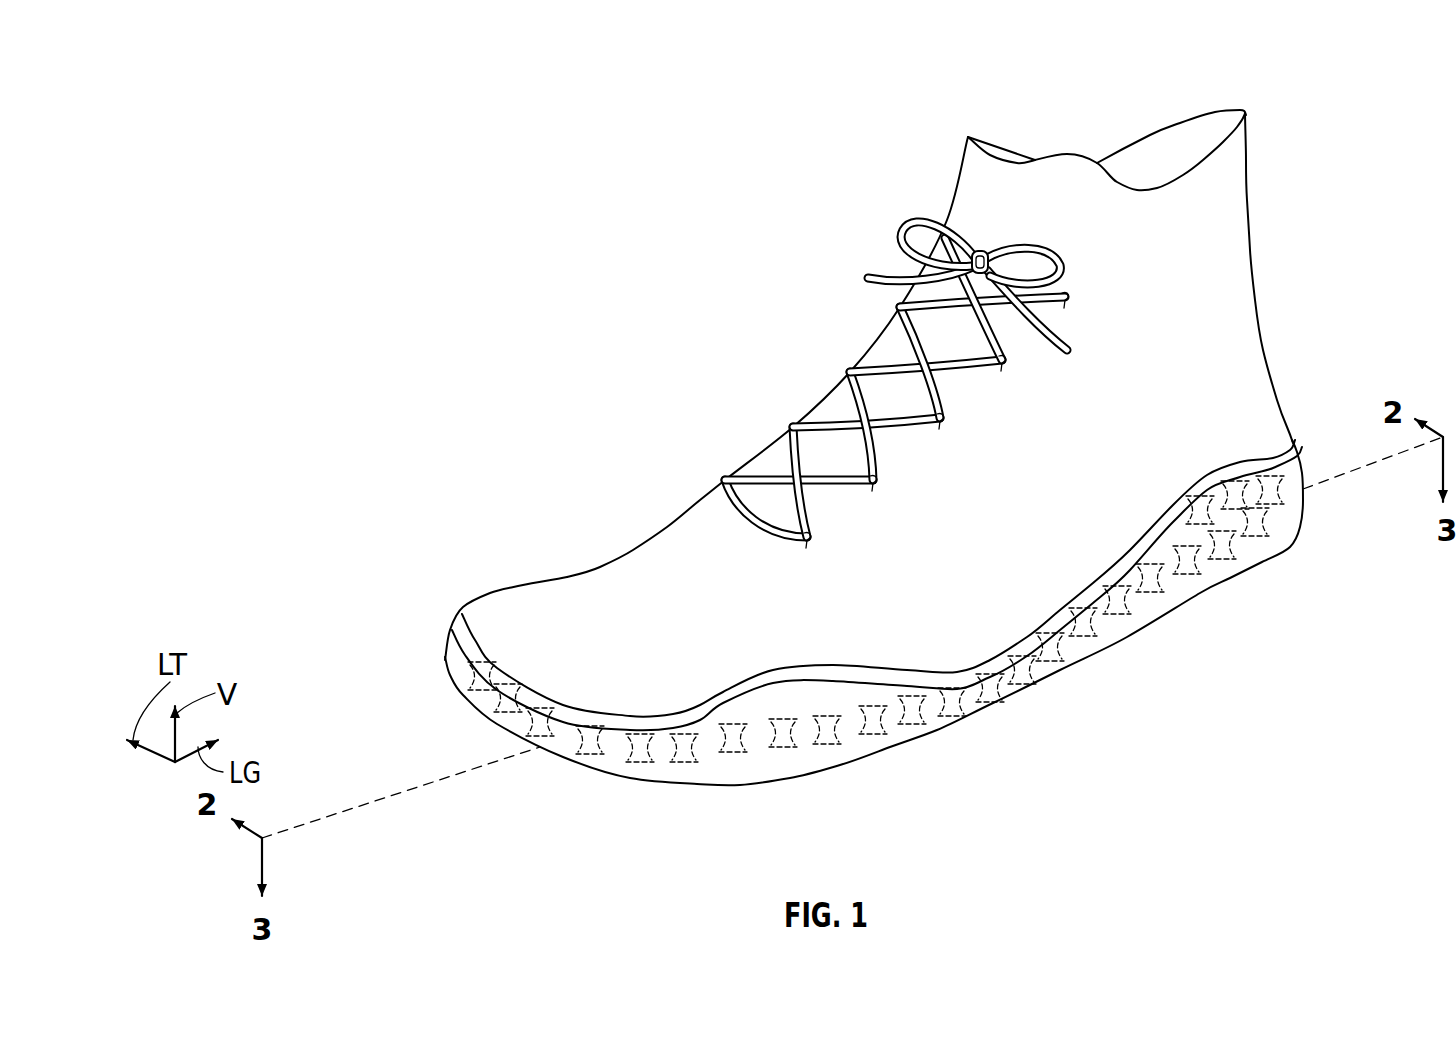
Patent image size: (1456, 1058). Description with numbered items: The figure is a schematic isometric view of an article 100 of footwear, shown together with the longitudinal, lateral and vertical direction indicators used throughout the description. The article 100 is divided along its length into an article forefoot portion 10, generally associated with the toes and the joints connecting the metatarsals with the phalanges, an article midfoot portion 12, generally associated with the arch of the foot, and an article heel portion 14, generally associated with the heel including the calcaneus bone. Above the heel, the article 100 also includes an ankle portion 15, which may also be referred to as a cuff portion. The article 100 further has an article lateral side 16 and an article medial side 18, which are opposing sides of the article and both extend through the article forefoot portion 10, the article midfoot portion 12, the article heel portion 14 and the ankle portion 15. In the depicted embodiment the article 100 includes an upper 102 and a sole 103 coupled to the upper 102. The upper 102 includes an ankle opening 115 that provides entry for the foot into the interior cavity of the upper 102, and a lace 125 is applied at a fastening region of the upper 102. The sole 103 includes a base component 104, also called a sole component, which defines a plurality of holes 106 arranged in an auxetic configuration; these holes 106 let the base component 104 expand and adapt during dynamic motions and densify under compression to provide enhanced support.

The article forefoot portion 10 is at (487, 593).
The article midfoot portion 12 is at (1030, 597).
The article heel portion 14 is at (1277, 417).
The ankle portion 15 is at (1272, 172).
The article lateral side 16 is at (993, 618).
The article medial side 18 is at (792, 417).
The article 100 is at (648, 238).
The upper 102 is at (573, 593).
The sole 103 is at (603, 792).
The base component 104 is at (663, 770).
The holes 106 is at (487, 703).
The ankle opening 115 is at (1103, 129).
The lace 125 is at (873, 363).